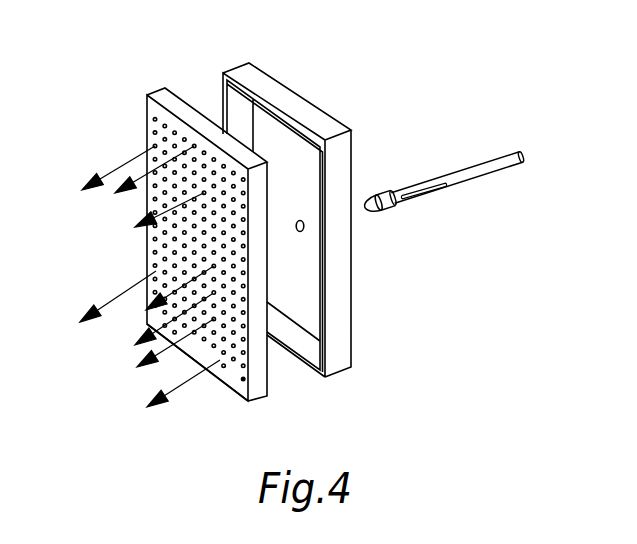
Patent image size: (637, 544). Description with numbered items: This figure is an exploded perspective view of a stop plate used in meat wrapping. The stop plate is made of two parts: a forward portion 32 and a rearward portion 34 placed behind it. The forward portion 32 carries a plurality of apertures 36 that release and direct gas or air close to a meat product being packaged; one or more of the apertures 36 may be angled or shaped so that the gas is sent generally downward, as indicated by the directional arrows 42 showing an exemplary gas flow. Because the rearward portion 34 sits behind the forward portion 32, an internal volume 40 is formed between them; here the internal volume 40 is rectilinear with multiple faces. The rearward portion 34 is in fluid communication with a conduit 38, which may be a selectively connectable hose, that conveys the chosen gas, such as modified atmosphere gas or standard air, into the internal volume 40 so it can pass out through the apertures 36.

The forward portion 32 is at (168, 100).
The rearward portion 34 is at (310, 110).
The apertures 36 is at (155, 205).
The conduit 38 is at (475, 165).
The internal volume 40 is at (310, 304).
The directional arrows 42 is at (186, 385).